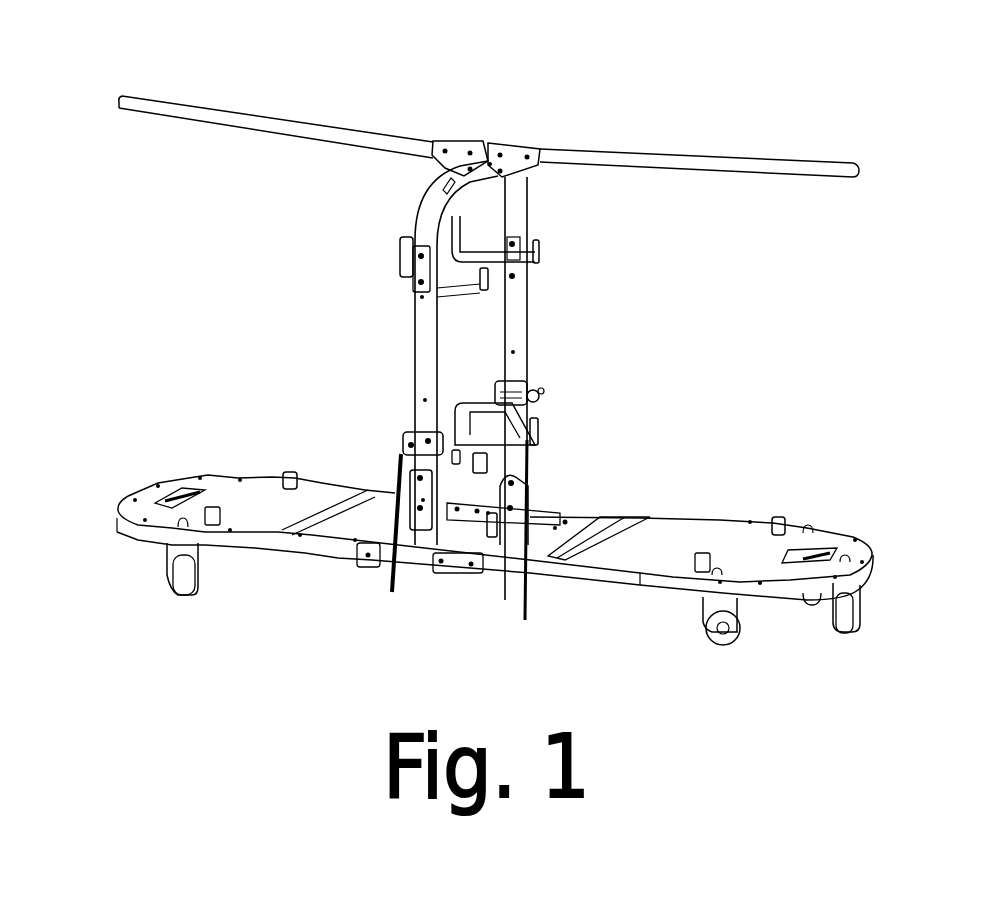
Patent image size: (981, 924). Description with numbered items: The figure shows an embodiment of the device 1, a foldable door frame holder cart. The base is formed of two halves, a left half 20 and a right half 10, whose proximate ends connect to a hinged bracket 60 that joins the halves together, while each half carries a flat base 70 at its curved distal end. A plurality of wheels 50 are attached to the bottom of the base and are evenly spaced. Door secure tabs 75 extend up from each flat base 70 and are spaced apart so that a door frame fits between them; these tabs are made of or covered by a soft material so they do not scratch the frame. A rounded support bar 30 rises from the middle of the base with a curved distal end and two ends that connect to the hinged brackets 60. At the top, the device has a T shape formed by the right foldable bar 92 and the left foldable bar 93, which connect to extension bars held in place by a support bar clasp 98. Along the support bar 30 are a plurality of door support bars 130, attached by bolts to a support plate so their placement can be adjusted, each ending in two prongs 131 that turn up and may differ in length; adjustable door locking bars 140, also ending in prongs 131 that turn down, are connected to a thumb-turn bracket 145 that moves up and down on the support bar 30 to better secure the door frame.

The device 1 is at (185, 213).
The right half 10 is at (643, 592).
The left half 20 is at (235, 548).
The support bar 30 is at (420, 205).
The wheels 50 is at (187, 577).
The hinged bracket 60 is at (447, 585).
The flat base 70 is at (205, 483).
The door secure tabs 75 is at (290, 472).
The right foldable bar 92 is at (817, 162).
The left foldable bar 93 is at (197, 113).
The support bar clasp 98 is at (479, 138).
The door support bars 130 is at (397, 272).
The prongs 131 is at (535, 244).
The adjustable door locking bars 140 is at (533, 452).
The thumb-turn bracket 145 is at (410, 443).